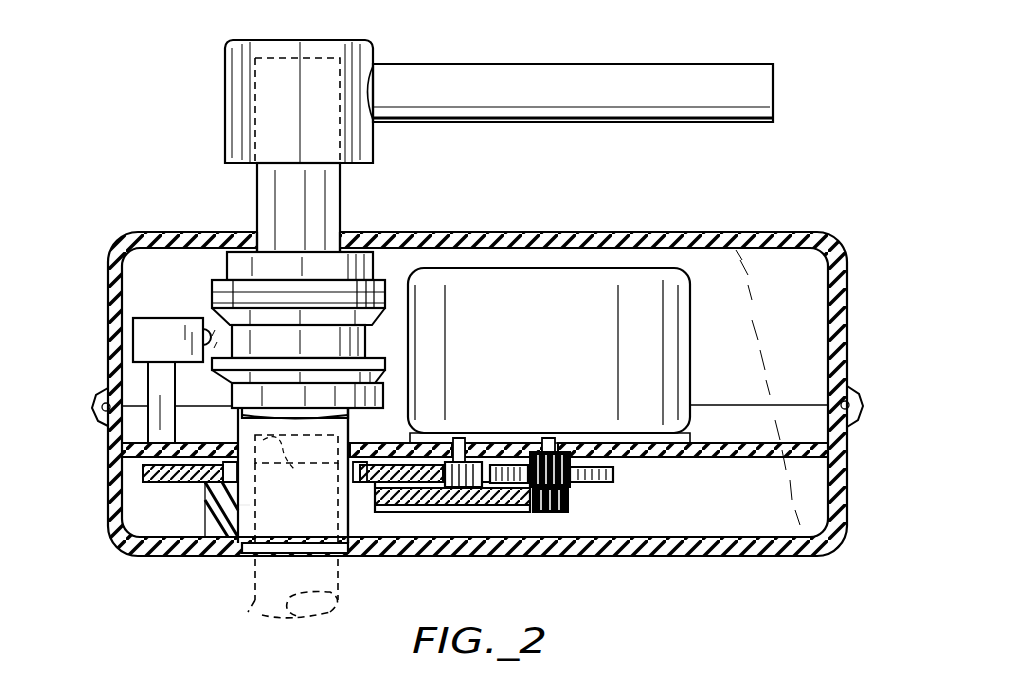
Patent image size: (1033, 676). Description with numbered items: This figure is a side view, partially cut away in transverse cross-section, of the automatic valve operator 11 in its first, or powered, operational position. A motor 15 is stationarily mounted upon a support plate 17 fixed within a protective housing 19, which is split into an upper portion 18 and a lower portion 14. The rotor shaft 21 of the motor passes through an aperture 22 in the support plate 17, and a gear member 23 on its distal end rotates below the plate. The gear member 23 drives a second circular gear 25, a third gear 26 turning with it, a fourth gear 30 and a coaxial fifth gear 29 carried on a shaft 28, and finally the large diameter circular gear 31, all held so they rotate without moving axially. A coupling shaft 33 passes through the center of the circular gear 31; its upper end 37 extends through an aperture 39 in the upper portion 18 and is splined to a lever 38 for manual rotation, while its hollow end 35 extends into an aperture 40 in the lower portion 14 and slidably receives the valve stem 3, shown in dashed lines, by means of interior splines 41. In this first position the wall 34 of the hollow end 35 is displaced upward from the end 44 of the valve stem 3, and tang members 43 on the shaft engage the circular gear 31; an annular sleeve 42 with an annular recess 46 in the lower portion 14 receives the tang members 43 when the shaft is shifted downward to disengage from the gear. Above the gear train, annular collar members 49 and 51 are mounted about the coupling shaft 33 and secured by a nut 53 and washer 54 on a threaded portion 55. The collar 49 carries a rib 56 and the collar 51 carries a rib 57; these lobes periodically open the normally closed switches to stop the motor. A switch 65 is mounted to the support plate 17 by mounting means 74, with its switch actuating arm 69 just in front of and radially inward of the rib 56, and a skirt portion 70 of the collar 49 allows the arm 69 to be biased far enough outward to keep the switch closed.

The valve stem 3 is at (248, 612).
The automatic valve operator 11 is at (162, 88).
The lower portion of housing 14 is at (847, 493).
The motor 15 is at (672, 330).
The support plate 17 is at (700, 449).
The upper portion of housing 18 is at (847, 318).
The protective housing 19 is at (552, 235).
The rotor shaft 21 is at (550, 440).
The aperture 22 is at (545, 440).
The gear member 23 is at (572, 490).
The second circular gear 25 is at (616, 473).
The third gear 26 is at (558, 515).
The shaft 28 is at (458, 440).
The fifth gear 29 is at (455, 512).
The fourth gear 30 is at (512, 510).
The large diameter circular gear 31 is at (150, 498).
The coupling shaft 33 is at (344, 180).
The wall 34 is at (286, 444).
The end of coupling shaft 35 is at (297, 548).
The opposite end of coupling shaft 37 is at (297, 52).
The lever 38 is at (527, 76).
The aperture 39 is at (350, 236).
The aperture 40 is at (348, 548).
The splines 41 is at (252, 568).
The annular sleeve 42 is at (192, 550).
The tang members 43 is at (208, 513).
The end of valve stem 44 is at (288, 484).
The annular recess 46 is at (230, 505).
The annular collar member 49 is at (388, 306).
The annular collar member 51 is at (392, 360).
The nut 53 is at (228, 267).
The washer 54 is at (222, 300).
The threaded portion 55 is at (274, 249).
The rib 56 is at (225, 378).
The rib 57 is at (395, 390).
The switch 65 is at (142, 342).
The switch actuating arm 69 is at (206, 328).
The skirt portion 70 is at (356, 342).
The mounting means 74 is at (155, 392).